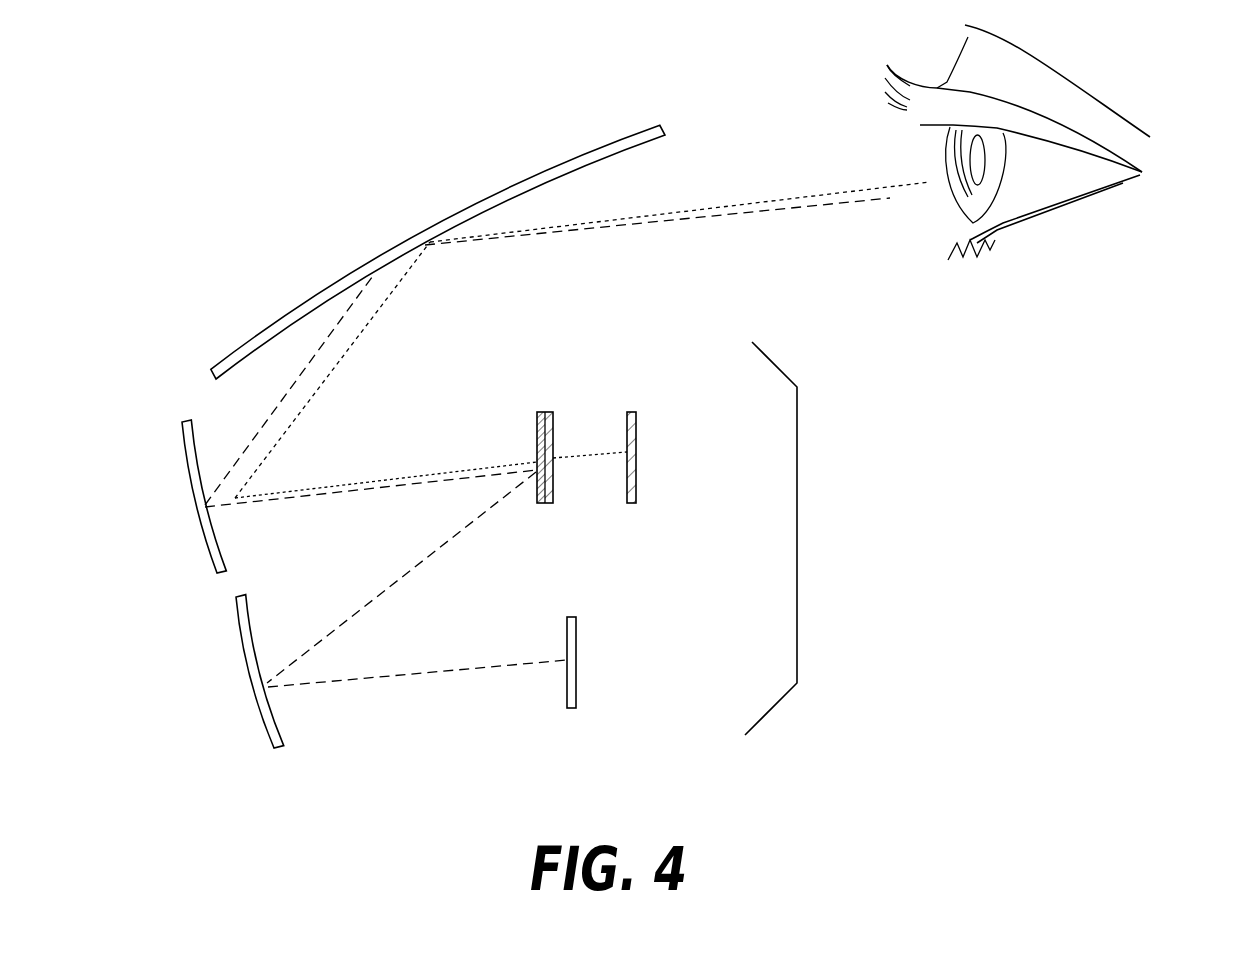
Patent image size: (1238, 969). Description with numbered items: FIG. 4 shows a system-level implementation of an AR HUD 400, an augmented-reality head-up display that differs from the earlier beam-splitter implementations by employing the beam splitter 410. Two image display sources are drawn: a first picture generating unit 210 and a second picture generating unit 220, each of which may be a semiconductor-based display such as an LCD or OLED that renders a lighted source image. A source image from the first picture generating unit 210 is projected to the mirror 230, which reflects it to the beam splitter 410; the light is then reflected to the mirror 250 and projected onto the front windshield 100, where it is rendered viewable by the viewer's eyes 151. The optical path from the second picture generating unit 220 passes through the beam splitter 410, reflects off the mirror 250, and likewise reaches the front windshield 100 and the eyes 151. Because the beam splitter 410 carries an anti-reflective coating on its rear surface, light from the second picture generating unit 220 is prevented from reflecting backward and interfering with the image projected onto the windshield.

The front windshield 100 is at (447, 216).
The eyes 151 is at (1123, 183).
The mirror 250 is at (207, 552).
The mirror 230 is at (257, 713).
The beam splitter 410 is at (553, 422).
The second picture generating unit 220 is at (637, 427).
The first picture generating unit 210 is at (577, 640).
The AR HUD 400 is at (797, 537).